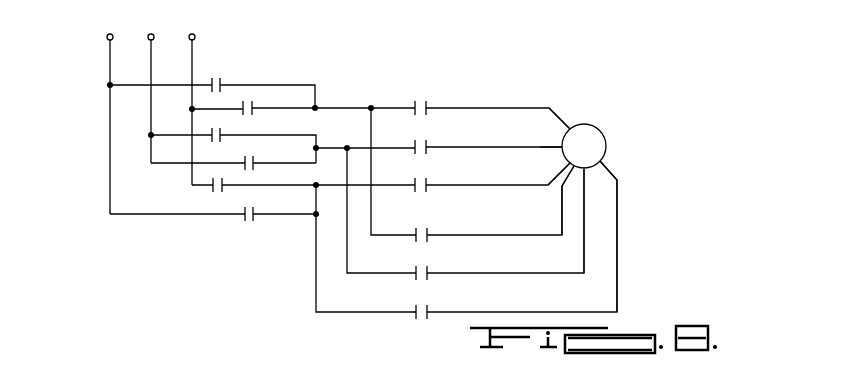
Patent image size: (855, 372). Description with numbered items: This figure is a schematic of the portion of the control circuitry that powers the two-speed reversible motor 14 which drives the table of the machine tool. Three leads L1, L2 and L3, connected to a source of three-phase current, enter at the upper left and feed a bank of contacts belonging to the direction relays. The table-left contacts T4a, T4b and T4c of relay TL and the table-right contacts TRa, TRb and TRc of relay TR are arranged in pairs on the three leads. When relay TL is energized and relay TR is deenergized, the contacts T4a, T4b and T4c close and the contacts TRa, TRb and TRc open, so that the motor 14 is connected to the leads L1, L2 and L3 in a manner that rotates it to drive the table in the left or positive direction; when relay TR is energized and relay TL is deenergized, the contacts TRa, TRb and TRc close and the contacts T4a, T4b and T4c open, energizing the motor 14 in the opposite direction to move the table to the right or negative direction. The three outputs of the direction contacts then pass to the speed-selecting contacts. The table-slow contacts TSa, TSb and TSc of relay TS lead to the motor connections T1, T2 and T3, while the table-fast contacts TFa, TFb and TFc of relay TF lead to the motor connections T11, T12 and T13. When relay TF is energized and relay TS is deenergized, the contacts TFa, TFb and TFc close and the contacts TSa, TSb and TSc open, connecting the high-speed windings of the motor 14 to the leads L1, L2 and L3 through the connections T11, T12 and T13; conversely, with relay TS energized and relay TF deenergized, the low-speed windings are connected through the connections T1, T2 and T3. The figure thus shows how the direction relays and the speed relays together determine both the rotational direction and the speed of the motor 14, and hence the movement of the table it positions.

The lead L1 is at (106, 38).
The lead L2 is at (146, 40).
The lead L3 is at (189, 40).
The table-left contact TLa T4a is at (213, 77).
The table-left contact TLb T4b is at (232, 120).
The table-left contact TLc T4c is at (236, 181).
The table-right contact TRa is at (262, 101).
The table-right contact TRb is at (251, 161).
The table-right contact TRc is at (252, 213).
The table-slow contact TSa is at (427, 101).
The table-slow contact TSb is at (427, 143).
The table-slow contact TSc is at (428, 181).
The table-fast contact TFa is at (428, 232).
The table-fast contact TFb is at (428, 270).
The table-fast contact TFc is at (428, 308).
The motor terminal T1 is at (563, 118).
The motor terminal T2 is at (552, 146).
The motor terminal T3 is at (559, 166).
The motor terminal T11 is at (562, 197).
The motor terminal T12 is at (583, 197).
The motor terminal T13 is at (618, 198).
The two-speed reversible motor 14 is at (598, 132).